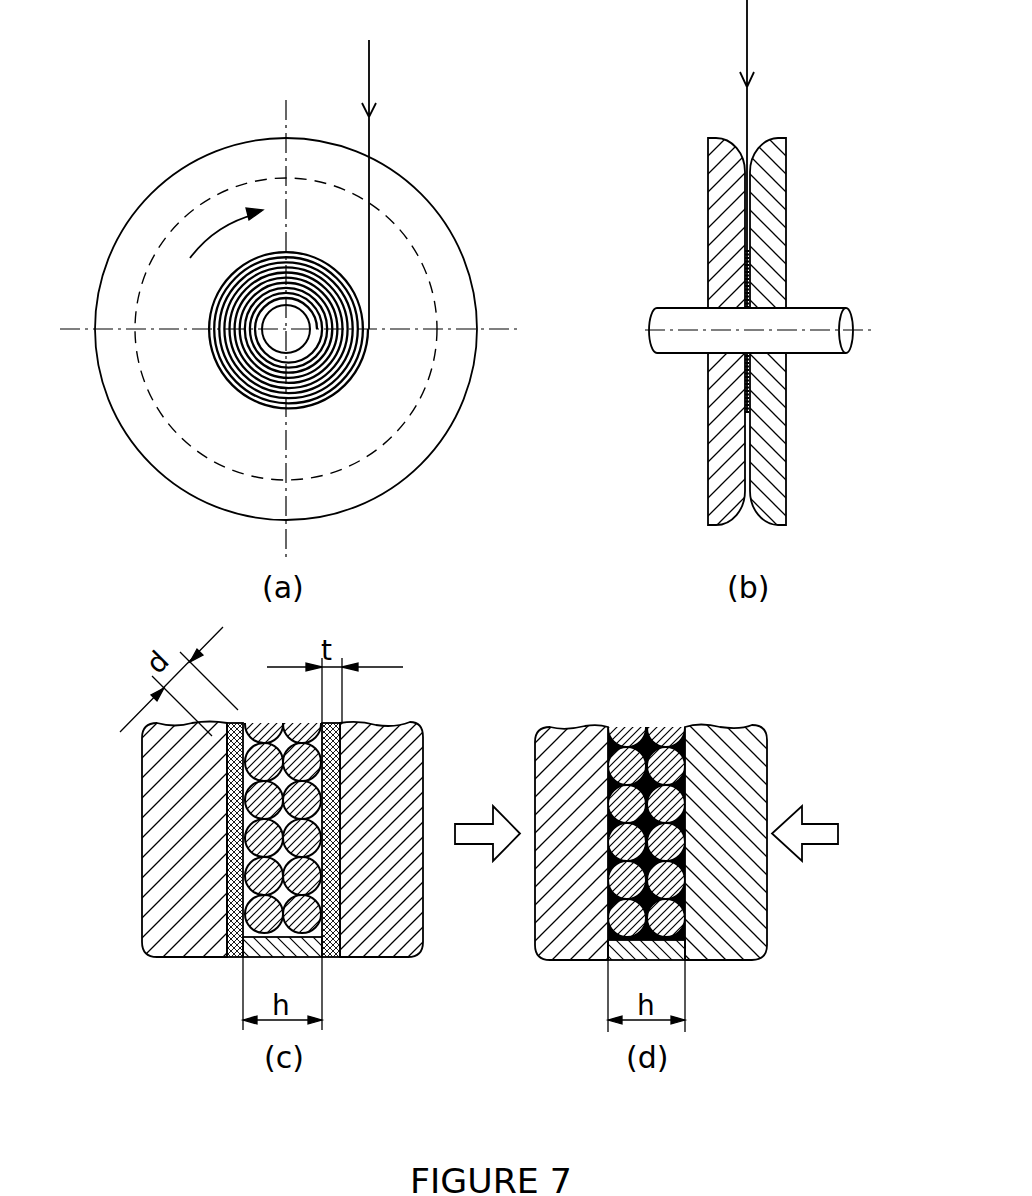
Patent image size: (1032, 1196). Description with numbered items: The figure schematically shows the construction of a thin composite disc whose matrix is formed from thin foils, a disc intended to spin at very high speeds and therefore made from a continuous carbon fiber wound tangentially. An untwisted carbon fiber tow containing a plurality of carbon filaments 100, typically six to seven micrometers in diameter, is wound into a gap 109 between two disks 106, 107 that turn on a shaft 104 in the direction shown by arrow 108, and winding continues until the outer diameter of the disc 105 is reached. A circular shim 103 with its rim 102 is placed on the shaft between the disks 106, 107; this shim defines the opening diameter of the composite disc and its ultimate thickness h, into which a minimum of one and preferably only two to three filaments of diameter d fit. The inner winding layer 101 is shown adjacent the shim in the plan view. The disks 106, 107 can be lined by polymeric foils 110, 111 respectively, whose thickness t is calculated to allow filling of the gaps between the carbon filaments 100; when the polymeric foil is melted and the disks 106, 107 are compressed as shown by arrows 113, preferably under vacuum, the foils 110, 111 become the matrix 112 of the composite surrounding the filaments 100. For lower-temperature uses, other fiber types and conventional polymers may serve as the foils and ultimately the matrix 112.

The carbon filaments 100 is at (369, 78).
The inner winding layer 101 is at (302, 363).
The rim 102 is at (320, 377).
The circular shim 103 is at (265, 358).
The shaft 104 is at (292, 320).
The outer diameter of the disc 105 is at (418, 402).
The disk 106 is at (417, 215).
The disk 107 is at (767, 210).
The arrow 108 is at (225, 227).
The gap 109 is at (752, 527).
The polymeric foil 110 is at (235, 948).
The polymeric foil 111 is at (332, 763).
The matrix 112 is at (637, 743).
The arrows 113 is at (467, 833).